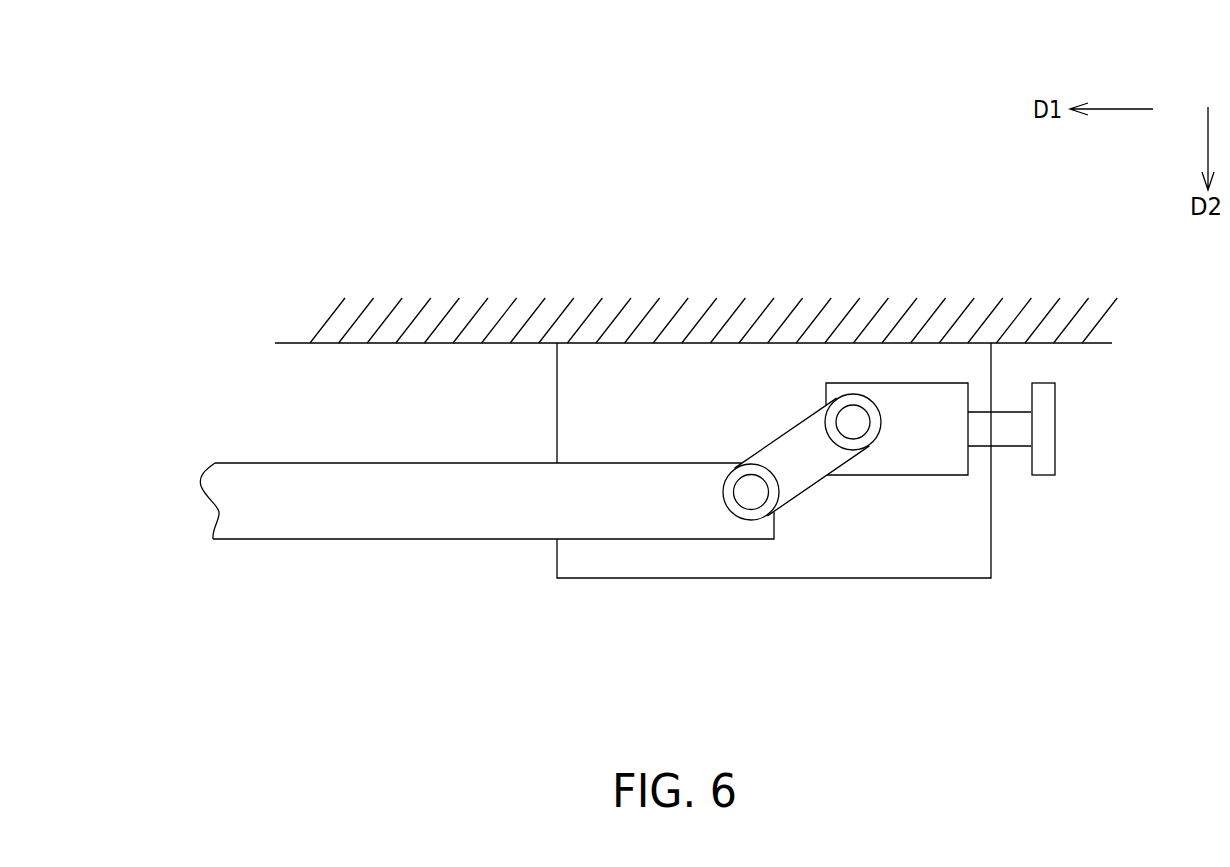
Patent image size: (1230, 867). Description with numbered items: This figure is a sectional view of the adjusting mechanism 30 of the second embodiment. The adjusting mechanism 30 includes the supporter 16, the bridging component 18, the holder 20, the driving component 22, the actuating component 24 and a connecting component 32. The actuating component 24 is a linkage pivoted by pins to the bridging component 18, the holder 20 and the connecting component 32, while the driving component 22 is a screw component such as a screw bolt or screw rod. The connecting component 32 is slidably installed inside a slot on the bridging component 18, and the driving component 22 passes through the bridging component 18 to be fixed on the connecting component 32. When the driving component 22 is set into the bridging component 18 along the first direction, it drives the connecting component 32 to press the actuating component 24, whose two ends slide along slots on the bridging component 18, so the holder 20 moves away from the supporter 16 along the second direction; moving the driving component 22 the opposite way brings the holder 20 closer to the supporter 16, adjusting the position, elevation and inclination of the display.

The supporter 16 is at (292, 343).
The bridging component 18 is at (660, 578).
The holder 20 is at (408, 520).
The driving component 22 is at (1046, 465).
The actuating component 24 is at (797, 482).
The adjusting mechanism 30 is at (435, 115).
The connecting component 32 is at (929, 467).